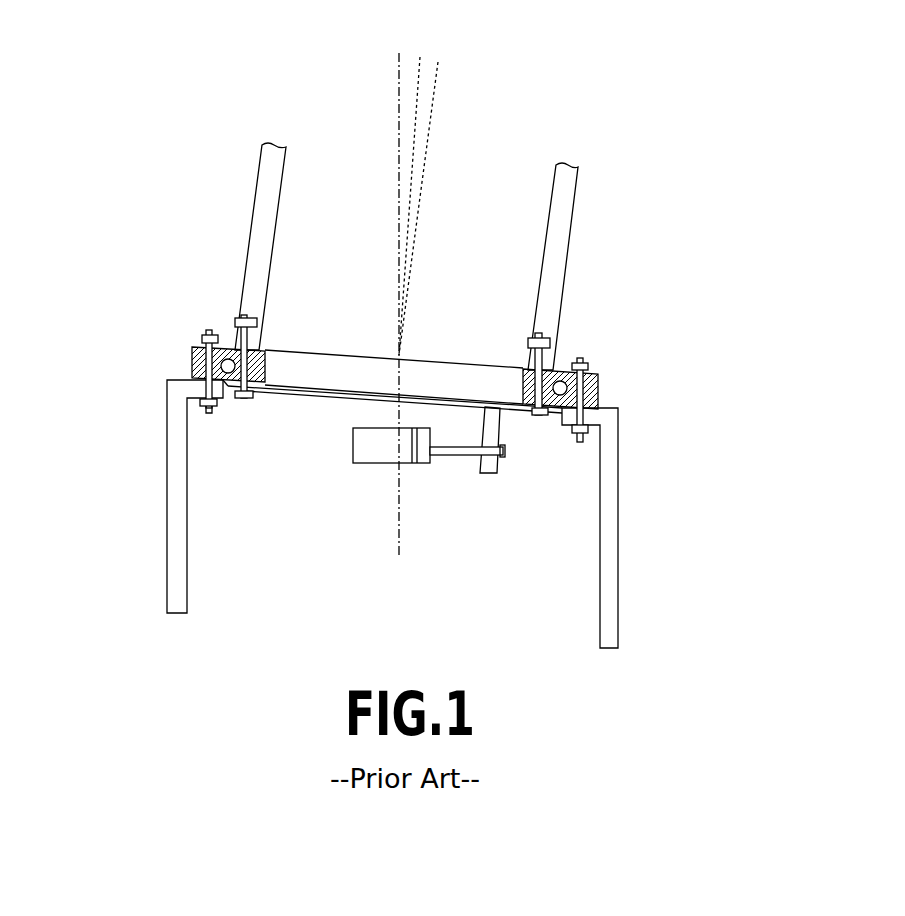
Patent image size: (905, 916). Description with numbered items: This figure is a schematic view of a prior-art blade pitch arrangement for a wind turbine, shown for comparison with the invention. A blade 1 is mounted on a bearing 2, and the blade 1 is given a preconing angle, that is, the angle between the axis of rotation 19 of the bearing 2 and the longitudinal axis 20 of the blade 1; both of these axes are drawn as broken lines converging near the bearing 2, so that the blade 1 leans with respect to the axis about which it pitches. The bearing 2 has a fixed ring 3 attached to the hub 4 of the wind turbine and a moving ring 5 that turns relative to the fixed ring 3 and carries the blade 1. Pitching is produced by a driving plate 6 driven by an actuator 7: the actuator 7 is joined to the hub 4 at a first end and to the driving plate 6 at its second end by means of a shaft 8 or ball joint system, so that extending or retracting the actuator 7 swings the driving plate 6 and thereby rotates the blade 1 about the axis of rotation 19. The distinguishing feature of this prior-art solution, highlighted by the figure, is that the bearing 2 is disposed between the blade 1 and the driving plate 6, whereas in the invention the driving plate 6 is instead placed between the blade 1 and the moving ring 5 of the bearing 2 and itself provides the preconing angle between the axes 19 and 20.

The blade 1 is at (260, 187).
The bearing 2 is at (638, 375).
The fixed ring 3 is at (192, 349).
The hub 4 is at (170, 483).
The moving ring 5 is at (236, 345).
The driving plate 6 is at (315, 397).
The actuator 7 is at (382, 448).
The shaft 8 is at (493, 430).
The axis of rotation 19 is at (419, 80).
The longitudinal axis 20 is at (437, 80).